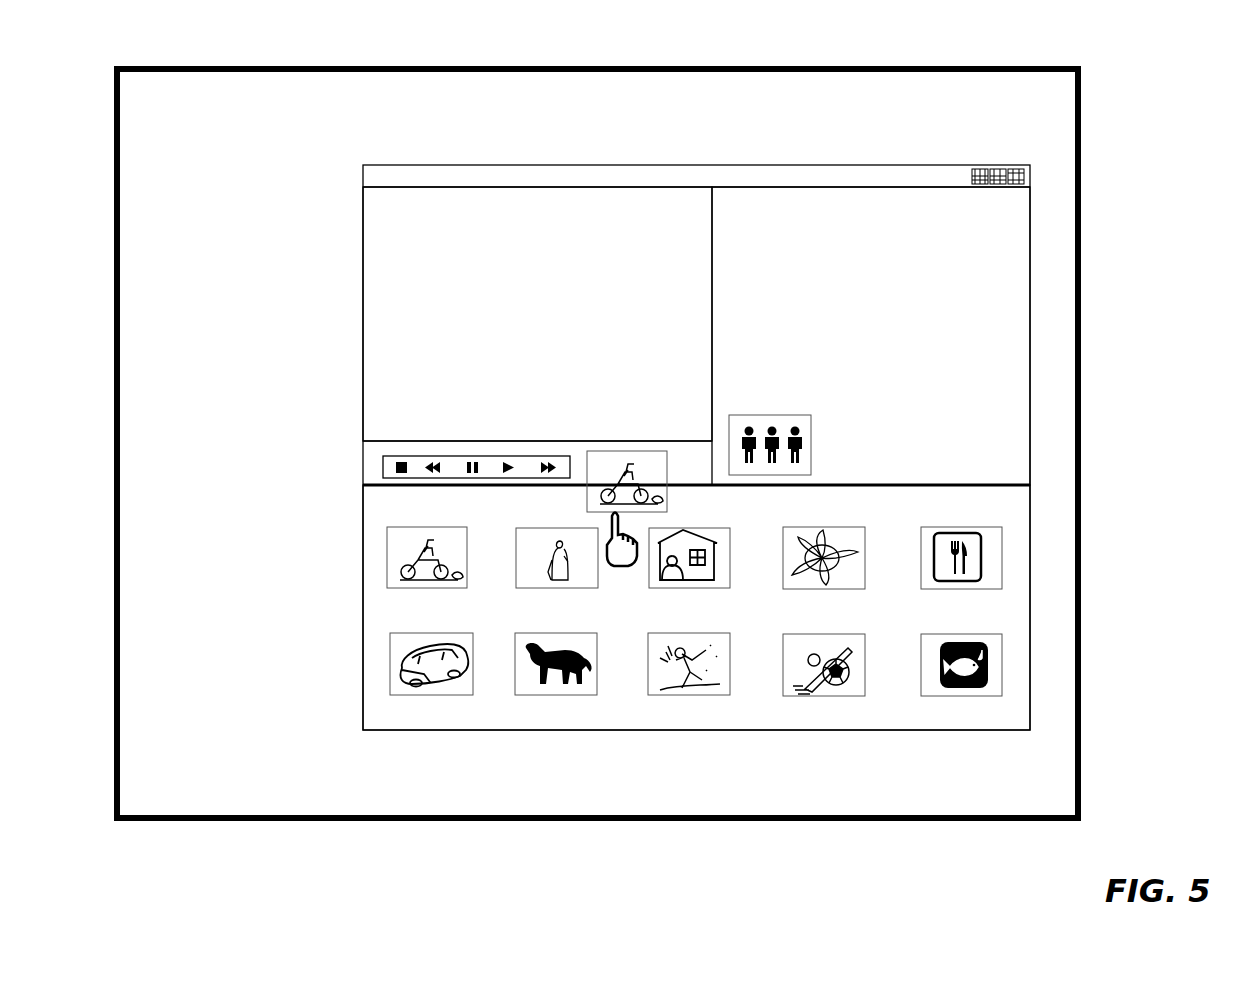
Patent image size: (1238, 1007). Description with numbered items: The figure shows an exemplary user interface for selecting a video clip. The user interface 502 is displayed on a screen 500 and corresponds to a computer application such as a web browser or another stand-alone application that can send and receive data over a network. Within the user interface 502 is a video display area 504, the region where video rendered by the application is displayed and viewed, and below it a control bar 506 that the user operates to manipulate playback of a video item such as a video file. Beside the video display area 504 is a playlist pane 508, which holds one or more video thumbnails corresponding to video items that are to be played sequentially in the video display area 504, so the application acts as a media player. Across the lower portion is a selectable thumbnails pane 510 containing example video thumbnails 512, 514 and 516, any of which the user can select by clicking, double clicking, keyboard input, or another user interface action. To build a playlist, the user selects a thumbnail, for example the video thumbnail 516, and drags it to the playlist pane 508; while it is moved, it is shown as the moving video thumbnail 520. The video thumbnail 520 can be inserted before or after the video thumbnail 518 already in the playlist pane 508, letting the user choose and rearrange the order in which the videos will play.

The screen 500 is at (598, 52).
The user interface 502 is at (808, 164).
The video display area 504 is at (363, 320).
The control bar 506 is at (383, 463).
The playlist pane 508 is at (1030, 420).
The selectable thumbnails pane 510 is at (1030, 670).
The video thumbnail 512 is at (597, 660).
The video thumbnail 514 is at (730, 658).
The video thumbnail 516 is at (387, 538).
The video thumbnail 518 is at (757, 415).
The moving video thumbnail 520 is at (643, 450).